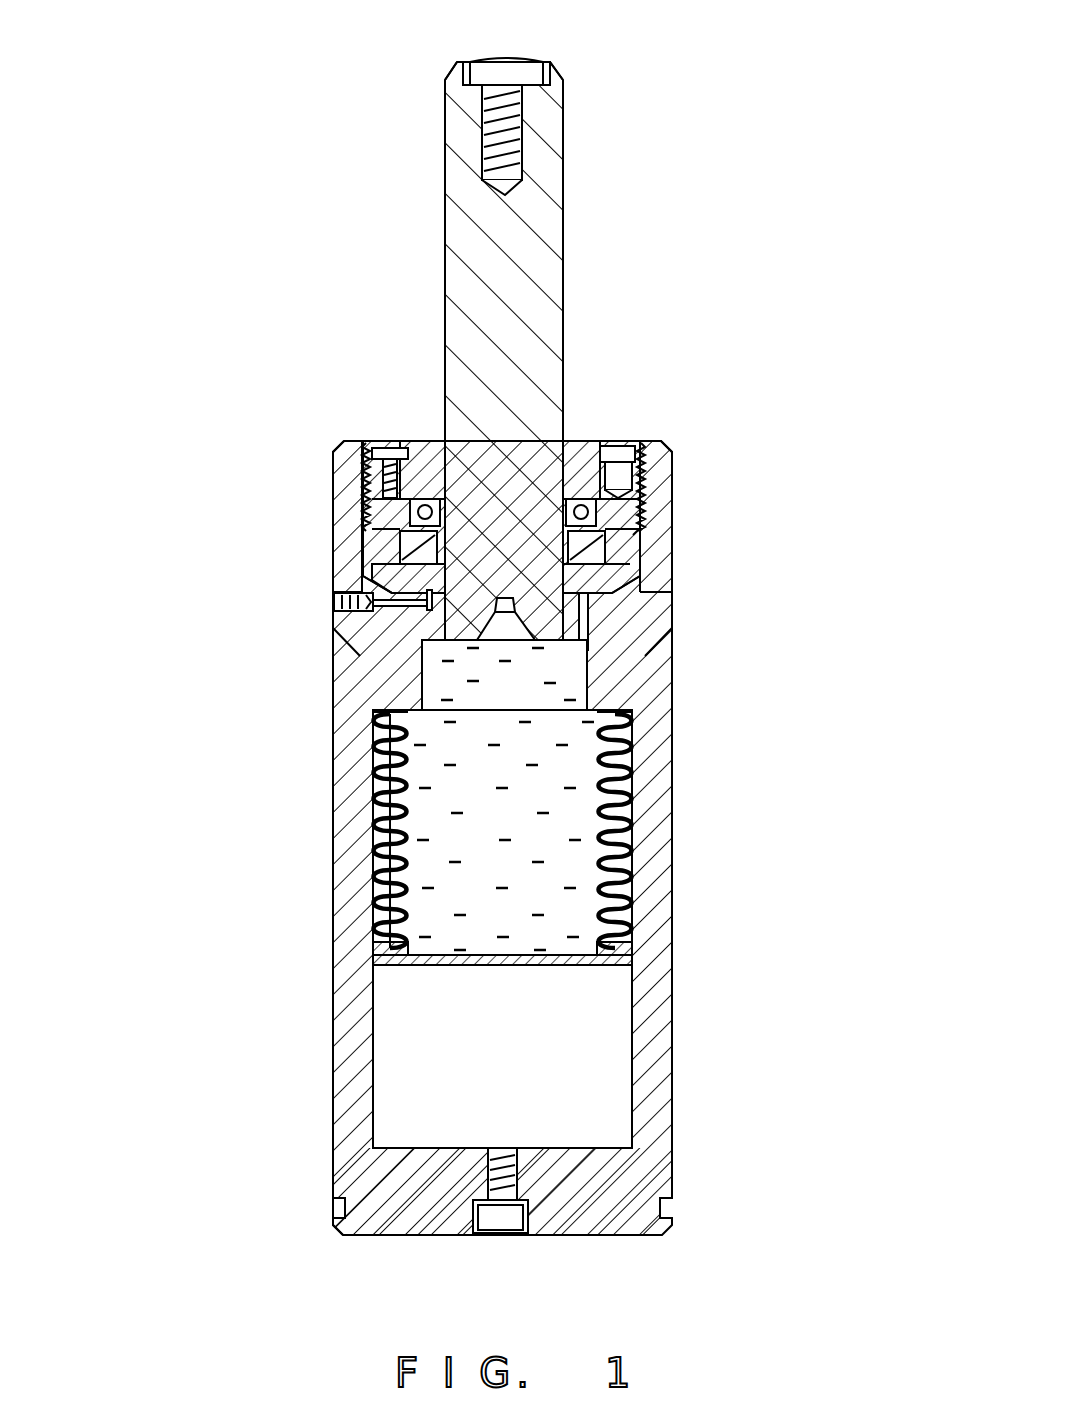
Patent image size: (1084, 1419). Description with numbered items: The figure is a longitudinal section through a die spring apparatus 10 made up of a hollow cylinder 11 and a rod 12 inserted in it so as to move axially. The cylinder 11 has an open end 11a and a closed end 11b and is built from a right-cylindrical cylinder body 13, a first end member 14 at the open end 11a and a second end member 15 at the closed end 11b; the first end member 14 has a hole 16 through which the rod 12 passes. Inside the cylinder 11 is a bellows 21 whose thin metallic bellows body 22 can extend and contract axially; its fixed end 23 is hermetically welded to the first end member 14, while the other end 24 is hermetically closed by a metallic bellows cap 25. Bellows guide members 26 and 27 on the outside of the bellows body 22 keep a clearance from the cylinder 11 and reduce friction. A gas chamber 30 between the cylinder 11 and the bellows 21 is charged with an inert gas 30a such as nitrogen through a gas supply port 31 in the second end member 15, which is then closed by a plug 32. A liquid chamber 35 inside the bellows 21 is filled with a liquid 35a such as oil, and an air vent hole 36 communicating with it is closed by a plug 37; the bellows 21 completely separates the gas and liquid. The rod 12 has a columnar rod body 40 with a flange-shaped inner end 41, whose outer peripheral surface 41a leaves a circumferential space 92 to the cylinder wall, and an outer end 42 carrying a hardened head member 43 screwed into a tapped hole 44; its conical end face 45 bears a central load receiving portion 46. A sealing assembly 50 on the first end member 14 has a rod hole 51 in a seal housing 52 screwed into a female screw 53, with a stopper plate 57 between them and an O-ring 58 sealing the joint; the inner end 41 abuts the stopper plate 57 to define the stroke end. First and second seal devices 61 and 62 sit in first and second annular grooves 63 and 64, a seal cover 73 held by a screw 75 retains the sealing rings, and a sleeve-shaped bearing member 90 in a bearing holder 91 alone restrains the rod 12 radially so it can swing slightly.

The die spring apparatus 10 is at (697, 138).
The cylinder 11 is at (684, 1012).
The open end 11a is at (433, 420).
The closed end 11b is at (360, 1238).
The rod 12 is at (560, 324).
The cylinder body 13 is at (660, 965).
The first end member 14 is at (656, 537).
The second end member 15 is at (628, 1222).
The hole 16 is at (660, 640).
The bellows 21 is at (622, 802).
The bellows body 22 is at (622, 762).
The fixed end 23 is at (626, 716).
The other end 24 is at (580, 956).
The bellows cap 25 is at (515, 967).
The bellows guide member 26 is at (380, 826).
The bellows guide member 27 is at (382, 952).
The gas chamber 30 is at (386, 1090).
The inert gas 30a is at (615, 1122).
The gas supply port 31 is at (500, 1148).
The plug 32 is at (488, 1226).
The liquid chamber 35 is at (398, 760).
The liquid 35a is at (450, 942).
The air vent hole 36 is at (420, 636).
The plug 37 is at (396, 604).
The rod body 40 is at (448, 232).
The inner end 41 is at (440, 686).
The outer peripheral surface 41a is at (436, 656).
The outer end 42 is at (450, 98).
The head member 43 is at (463, 68).
The tapped hole 44 is at (490, 150).
The end face 45 is at (492, 60).
The load receiving portion 46 is at (518, 59).
The sealing assembly 50 is at (368, 441).
The rod hole 51 is at (560, 440).
The seal housing 52 is at (650, 498).
The female screw 53 is at (652, 482).
The stopper plate 57 is at (658, 593).
The O-ring 58 is at (655, 560).
The first seal device 61 is at (600, 441).
The second seal device 62 is at (650, 520).
The first annular groove 63 is at (410, 495).
The second annular groove 64 is at (432, 516).
The seal cover 73 is at (406, 441).
The screw 75 is at (366, 458).
The bearing member 90 is at (345, 600).
The bearing holder 91 is at (416, 548).
The space 92 is at (566, 648).